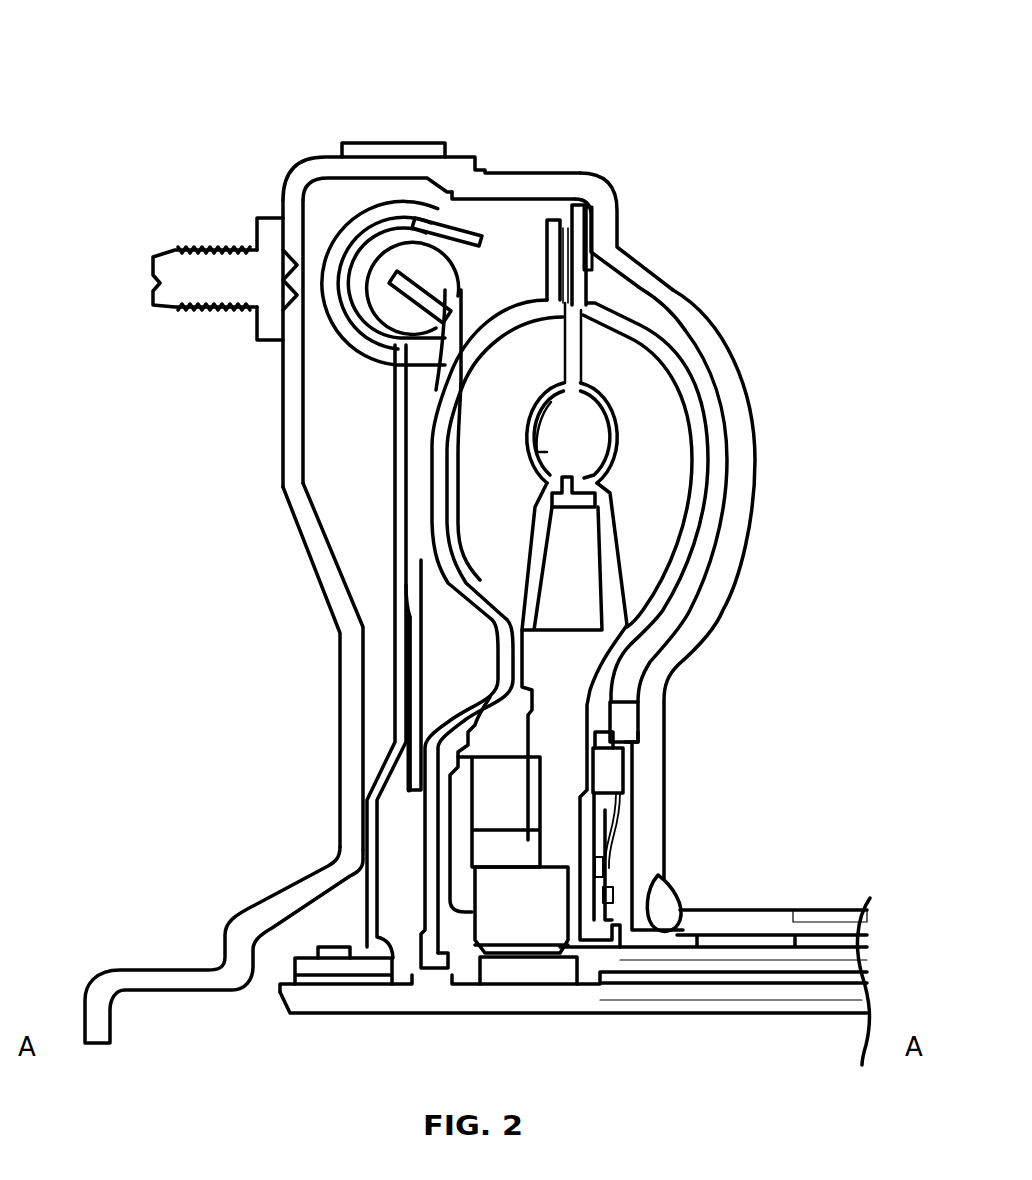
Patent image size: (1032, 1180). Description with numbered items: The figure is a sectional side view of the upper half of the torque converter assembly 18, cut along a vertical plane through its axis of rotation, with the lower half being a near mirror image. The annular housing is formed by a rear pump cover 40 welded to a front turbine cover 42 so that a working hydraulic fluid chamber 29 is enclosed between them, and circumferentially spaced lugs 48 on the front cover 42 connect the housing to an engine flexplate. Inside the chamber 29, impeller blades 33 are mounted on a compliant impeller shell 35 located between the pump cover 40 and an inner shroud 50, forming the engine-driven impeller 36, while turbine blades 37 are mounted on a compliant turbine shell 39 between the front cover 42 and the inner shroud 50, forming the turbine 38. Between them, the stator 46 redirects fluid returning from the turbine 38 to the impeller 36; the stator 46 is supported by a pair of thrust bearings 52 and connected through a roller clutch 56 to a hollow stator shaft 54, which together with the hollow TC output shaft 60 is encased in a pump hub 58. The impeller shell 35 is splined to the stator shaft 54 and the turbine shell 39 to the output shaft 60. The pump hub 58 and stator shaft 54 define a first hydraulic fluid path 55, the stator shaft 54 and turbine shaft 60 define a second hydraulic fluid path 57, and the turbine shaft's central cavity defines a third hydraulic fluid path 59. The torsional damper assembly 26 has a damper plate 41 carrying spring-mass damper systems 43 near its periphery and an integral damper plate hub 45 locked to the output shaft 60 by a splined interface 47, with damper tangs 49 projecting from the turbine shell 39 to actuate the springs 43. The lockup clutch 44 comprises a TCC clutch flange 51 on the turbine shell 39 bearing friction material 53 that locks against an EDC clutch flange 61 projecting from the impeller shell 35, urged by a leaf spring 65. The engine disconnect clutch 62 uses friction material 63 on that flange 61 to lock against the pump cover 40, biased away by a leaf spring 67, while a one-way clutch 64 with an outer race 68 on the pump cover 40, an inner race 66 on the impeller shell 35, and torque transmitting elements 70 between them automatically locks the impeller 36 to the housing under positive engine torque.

The torque converter assembly 18 is at (142, 70).
The torsional damper assembly 26 is at (337, 218).
The working hydraulic fluid chamber 29 is at (322, 407).
The impeller blades 33 is at (640, 355).
The impeller shell 35 is at (692, 382).
The impeller 36 is at (738, 410).
The turbine blades 37 is at (473, 497).
The turbine 38 is at (428, 446).
The turbine shell 39 is at (460, 557).
The rear pump cover 40 is at (748, 550).
The damper plate 41 is at (482, 190).
The front turbine cover 42 is at (338, 692).
The spring-mass damper systems 43 is at (388, 222).
The lockup clutch 44 is at (549, 200).
The damper plate hub 45 is at (330, 945).
The stator 46 is at (600, 660).
The splined interface 47 is at (293, 966).
The lugs 48 is at (190, 247).
The damper tangs 49 is at (405, 270).
The inner shroud 50 is at (625, 440).
The TCC clutch flange 51 is at (518, 205).
The thrust bearings 52 is at (447, 783).
The friction material 53 is at (565, 215).
The stator shaft 54 is at (852, 940).
The first hydraulic fluid path 55 is at (691, 940).
The roller clutch 56 is at (480, 852).
The second hydraulic fluid path 57 is at (718, 975).
The pump hub 58 is at (785, 905).
The third hydraulic fluid path 59 is at (744, 1028).
The TC output shaft 60 is at (815, 978).
The EDC clutch flange 61 is at (597, 200).
The engine disconnect clutch 62 is at (608, 195).
The friction material 63 is at (598, 222).
The one-way clutch 64 is at (640, 716).
The leaf spring 65 is at (405, 715).
The inner race 66 is at (632, 773).
The leaf spring 67 is at (637, 797).
The outer race 68 is at (642, 742).
The torque transmitting elements 70 is at (630, 750).